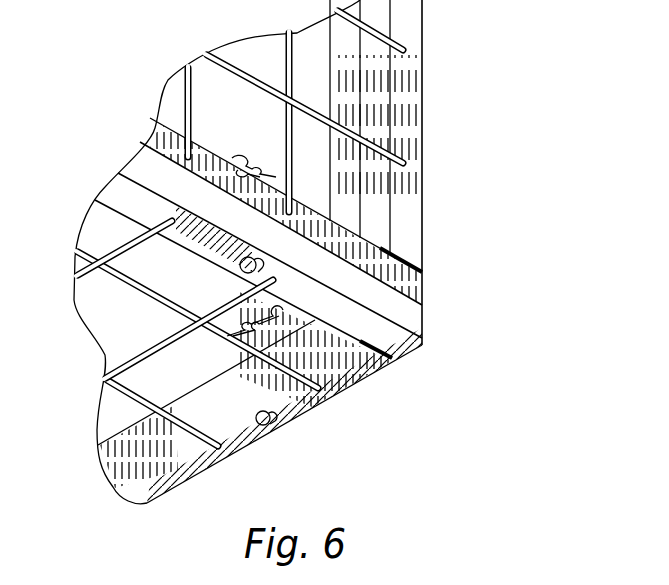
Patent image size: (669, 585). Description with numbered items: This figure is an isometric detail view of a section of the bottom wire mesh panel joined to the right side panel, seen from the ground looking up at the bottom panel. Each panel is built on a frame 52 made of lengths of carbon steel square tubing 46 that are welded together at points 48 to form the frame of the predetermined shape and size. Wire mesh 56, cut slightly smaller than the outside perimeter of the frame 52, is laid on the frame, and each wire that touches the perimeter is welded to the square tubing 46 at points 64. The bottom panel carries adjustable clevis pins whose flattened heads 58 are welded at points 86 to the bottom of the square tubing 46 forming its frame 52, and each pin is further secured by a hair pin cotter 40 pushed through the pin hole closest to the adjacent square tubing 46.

The hair pin cotter 40 is at (237, 147).
The square tubing 46 is at (410, 105).
The welding points 48 is at (412, 262).
The frame 52 is at (162, 153).
The wire mesh 56 is at (184, 148).
The head 58 is at (250, 278).
The welding points 64 is at (406, 50).
The welding point 86 is at (238, 262).